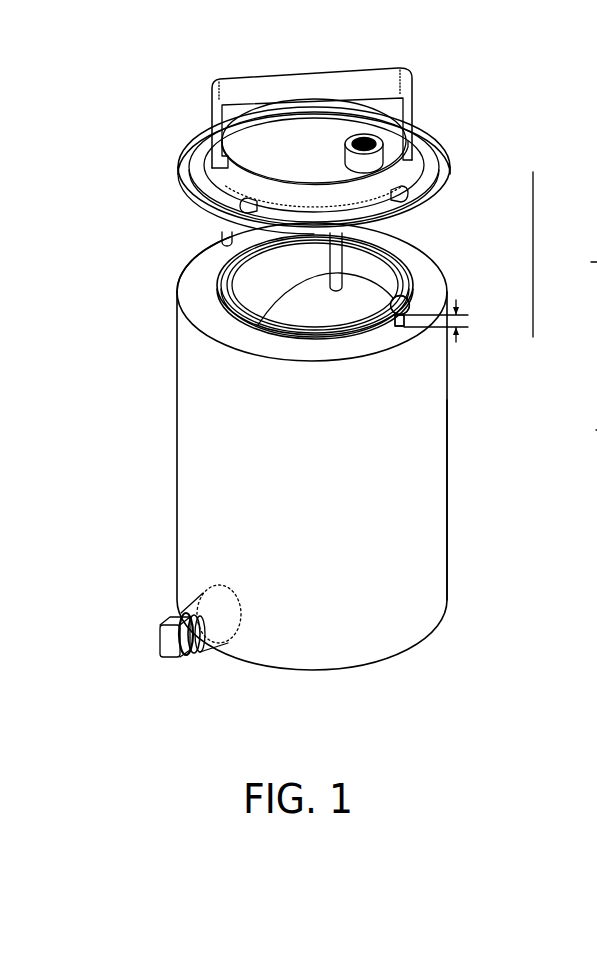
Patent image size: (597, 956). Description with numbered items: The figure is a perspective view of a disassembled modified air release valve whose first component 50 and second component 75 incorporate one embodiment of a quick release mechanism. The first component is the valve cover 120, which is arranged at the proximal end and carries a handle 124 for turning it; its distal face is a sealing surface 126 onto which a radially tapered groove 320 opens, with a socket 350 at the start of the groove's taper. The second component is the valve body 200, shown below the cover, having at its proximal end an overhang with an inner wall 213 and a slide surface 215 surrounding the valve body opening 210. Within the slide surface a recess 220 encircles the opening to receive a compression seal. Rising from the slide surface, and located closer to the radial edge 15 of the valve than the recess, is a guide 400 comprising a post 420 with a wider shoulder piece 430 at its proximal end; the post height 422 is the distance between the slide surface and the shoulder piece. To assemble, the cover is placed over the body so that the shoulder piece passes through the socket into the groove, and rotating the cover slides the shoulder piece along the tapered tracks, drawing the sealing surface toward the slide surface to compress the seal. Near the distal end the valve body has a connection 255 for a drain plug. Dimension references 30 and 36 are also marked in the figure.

The radial edge 15 is at (580, 264).
The height of tank opening region 30 is at (533, 243).
The tank interior volume 36 is at (587, 432).
The first component 50 is at (336, 158).
The second component 75 is at (455, 568).
The valve cover 120 is at (457, 140).
The handle 124 is at (305, 78).
The sealing surface 126 is at (197, 210).
The valve body 200 is at (447, 465).
The valve body opening 210 is at (313, 322).
The inner wall 213 is at (255, 290).
The slide surface 215 is at (198, 272).
The recess 220 is at (231, 310).
The connection 255 is at (217, 630).
The radially tapered groove 320 is at (410, 198).
The socket 350 is at (403, 189).
The guide 400 is at (395, 319).
The post 420 is at (403, 327).
The post height 422 is at (462, 320).
The shoulder piece 430 is at (401, 296).